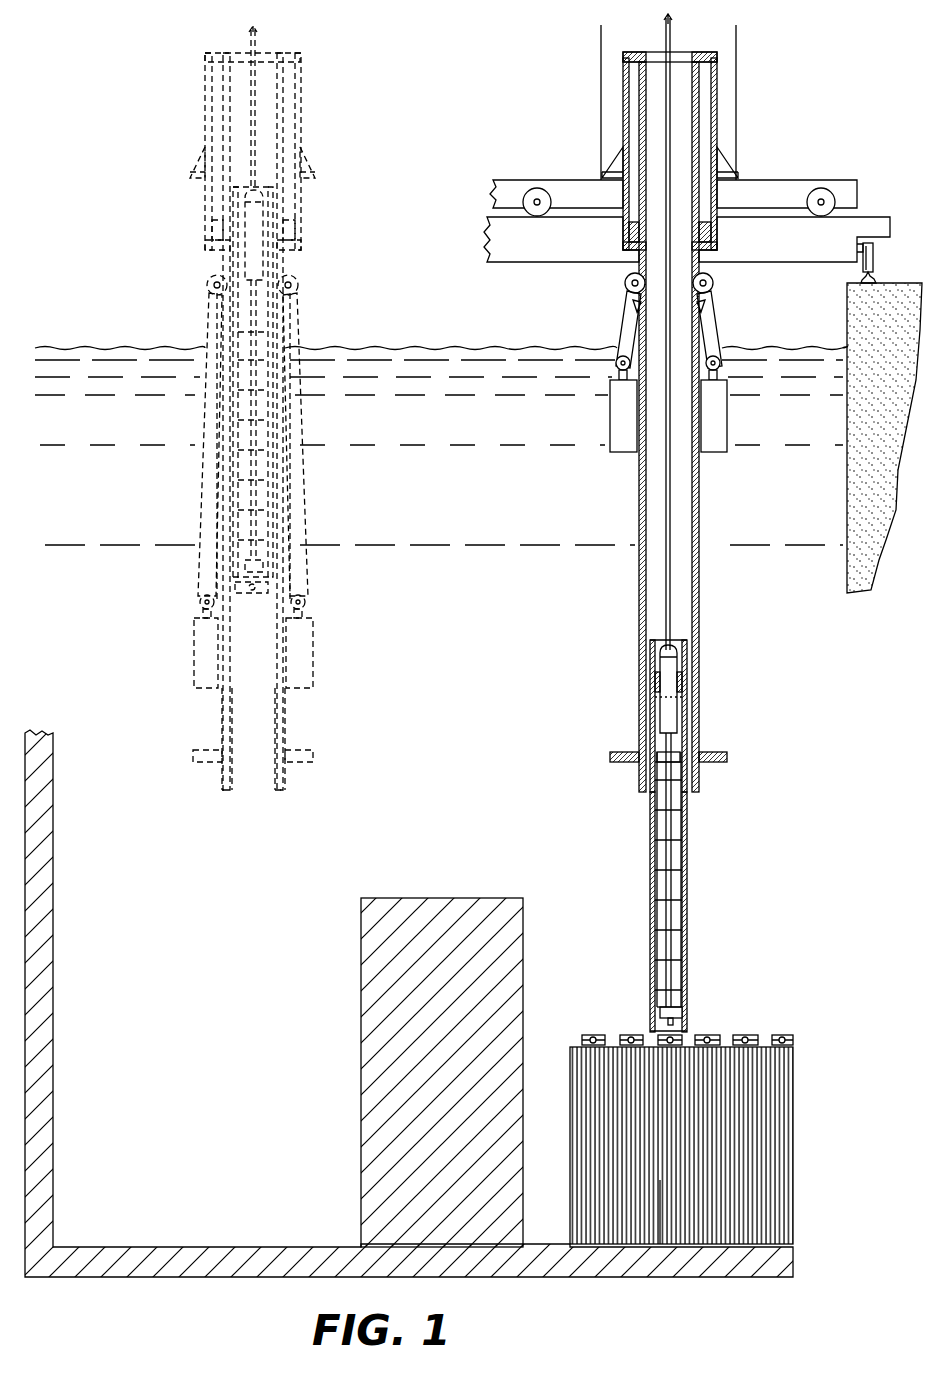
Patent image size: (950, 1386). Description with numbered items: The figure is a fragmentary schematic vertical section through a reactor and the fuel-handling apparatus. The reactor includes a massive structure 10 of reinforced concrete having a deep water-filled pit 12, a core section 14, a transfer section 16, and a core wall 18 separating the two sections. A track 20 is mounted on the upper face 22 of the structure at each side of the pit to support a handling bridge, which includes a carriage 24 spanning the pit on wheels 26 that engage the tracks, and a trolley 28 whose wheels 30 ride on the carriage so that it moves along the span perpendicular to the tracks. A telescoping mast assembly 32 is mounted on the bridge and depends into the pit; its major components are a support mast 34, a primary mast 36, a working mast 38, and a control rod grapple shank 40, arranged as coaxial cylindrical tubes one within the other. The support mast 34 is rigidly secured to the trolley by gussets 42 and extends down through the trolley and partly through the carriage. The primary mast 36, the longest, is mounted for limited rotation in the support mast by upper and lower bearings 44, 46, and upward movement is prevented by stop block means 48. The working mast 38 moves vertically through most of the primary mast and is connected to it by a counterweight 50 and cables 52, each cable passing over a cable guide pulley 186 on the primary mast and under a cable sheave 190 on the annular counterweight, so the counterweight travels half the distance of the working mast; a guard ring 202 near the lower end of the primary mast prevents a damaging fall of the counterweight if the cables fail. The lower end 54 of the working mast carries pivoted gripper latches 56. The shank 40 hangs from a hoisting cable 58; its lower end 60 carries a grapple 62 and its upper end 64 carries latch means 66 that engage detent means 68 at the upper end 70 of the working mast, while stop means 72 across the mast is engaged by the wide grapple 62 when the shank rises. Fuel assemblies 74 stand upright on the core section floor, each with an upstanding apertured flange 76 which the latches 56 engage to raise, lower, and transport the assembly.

The massive structure 10 is at (890, 253).
The deep pit 12 is at (843, 310).
The core section 14 is at (778, 1238).
The transfer section 16 is at (362, 910).
The core wall 18 is at (487, 898).
The track 20 is at (878, 283).
The upper face 22 is at (858, 283).
The carriage 24 is at (868, 212).
The wheels 26 is at (858, 247).
The trolley 28 is at (770, 175).
The wheels 30 is at (823, 190).
The telescoping mast assembly 32 is at (640, 500).
The support mast 34 is at (718, 115).
The primary mast 36 is at (700, 500).
The working mast 38 is at (690, 818).
The control rod grapple shank 40 is at (675, 858).
The gussets 42 is at (615, 165).
The upper bearing 44 is at (712, 52).
The lower bearing 46 is at (706, 233).
The stop block means 48 is at (704, 250).
The counterweight 50 is at (610, 418).
The cables 52 is at (621, 328).
The lower end of working mast 54 is at (688, 1038).
The gripper latches 56 is at (690, 1040).
The hoisting cable 58 is at (672, 600).
The lower end of shank 60 is at (660, 1002).
The grapple 62 is at (662, 1013).
The upper end of shank 64 is at (673, 716).
The latch means 66 is at (657, 697).
The detent means 68 is at (682, 680).
The upper end of working mast 70 is at (651, 655).
The stop means 72 is at (660, 750).
The fuel assemblies 74 is at (668, 1213).
The upstanding flange 76 is at (598, 1035).
The cable guide pulleys 186 is at (633, 283).
The cable sheaves 190 is at (617, 367).
The guard ring 202 is at (720, 752).